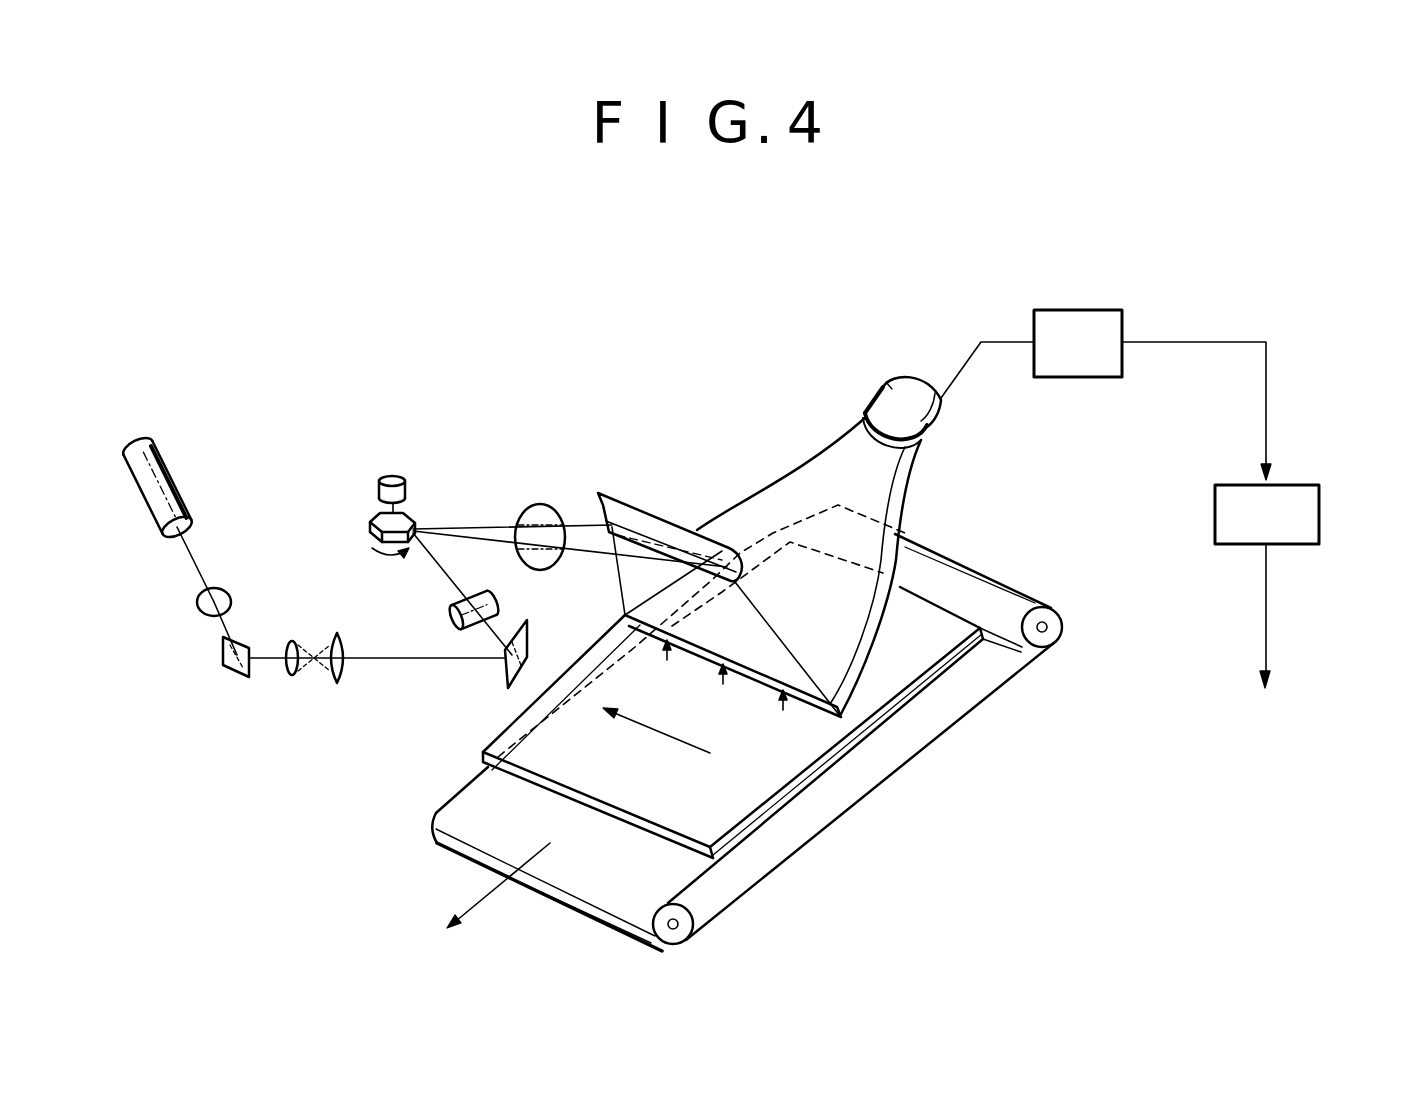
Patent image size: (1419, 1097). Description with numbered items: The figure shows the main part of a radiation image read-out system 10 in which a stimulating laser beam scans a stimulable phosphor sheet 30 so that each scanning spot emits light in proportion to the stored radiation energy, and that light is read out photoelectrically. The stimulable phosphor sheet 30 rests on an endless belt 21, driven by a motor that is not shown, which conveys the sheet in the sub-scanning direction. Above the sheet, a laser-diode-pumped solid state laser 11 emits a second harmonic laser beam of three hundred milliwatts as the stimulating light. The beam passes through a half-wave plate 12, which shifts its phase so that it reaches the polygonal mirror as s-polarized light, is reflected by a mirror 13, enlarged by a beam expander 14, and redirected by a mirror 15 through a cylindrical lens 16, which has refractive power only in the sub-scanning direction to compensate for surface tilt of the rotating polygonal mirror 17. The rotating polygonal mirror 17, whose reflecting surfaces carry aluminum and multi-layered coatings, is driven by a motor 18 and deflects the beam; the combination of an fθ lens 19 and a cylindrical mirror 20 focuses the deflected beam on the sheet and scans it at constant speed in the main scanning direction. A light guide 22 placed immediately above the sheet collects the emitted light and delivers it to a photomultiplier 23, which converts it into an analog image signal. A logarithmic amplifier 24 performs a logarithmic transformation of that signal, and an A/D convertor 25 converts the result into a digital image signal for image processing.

The radiation image read-out system 10 is at (868, 318).
The laser-diode-pumped solid state laser 11 is at (176, 483).
The half-wave plate 12 is at (197, 601).
The mirror 13 is at (222, 666).
The beam expander 14 is at (347, 688).
The mirror 15 is at (506, 674).
The cylindrical lens 16 is at (452, 620).
The rotating polygonal mirror 17 is at (418, 522).
The motor 18 is at (381, 482).
The fθ lens 19 is at (545, 568).
The cylindrical mirror 20 is at (650, 512).
The endless belt 21 is at (960, 718).
The light guide 22 is at (770, 508).
The photomultiplier 23 is at (884, 388).
The logarithmic amplifier 24 is at (1088, 310).
The A/D convertor 25 is at (1224, 485).
The stimulable phosphor sheet 30 is at (766, 818).